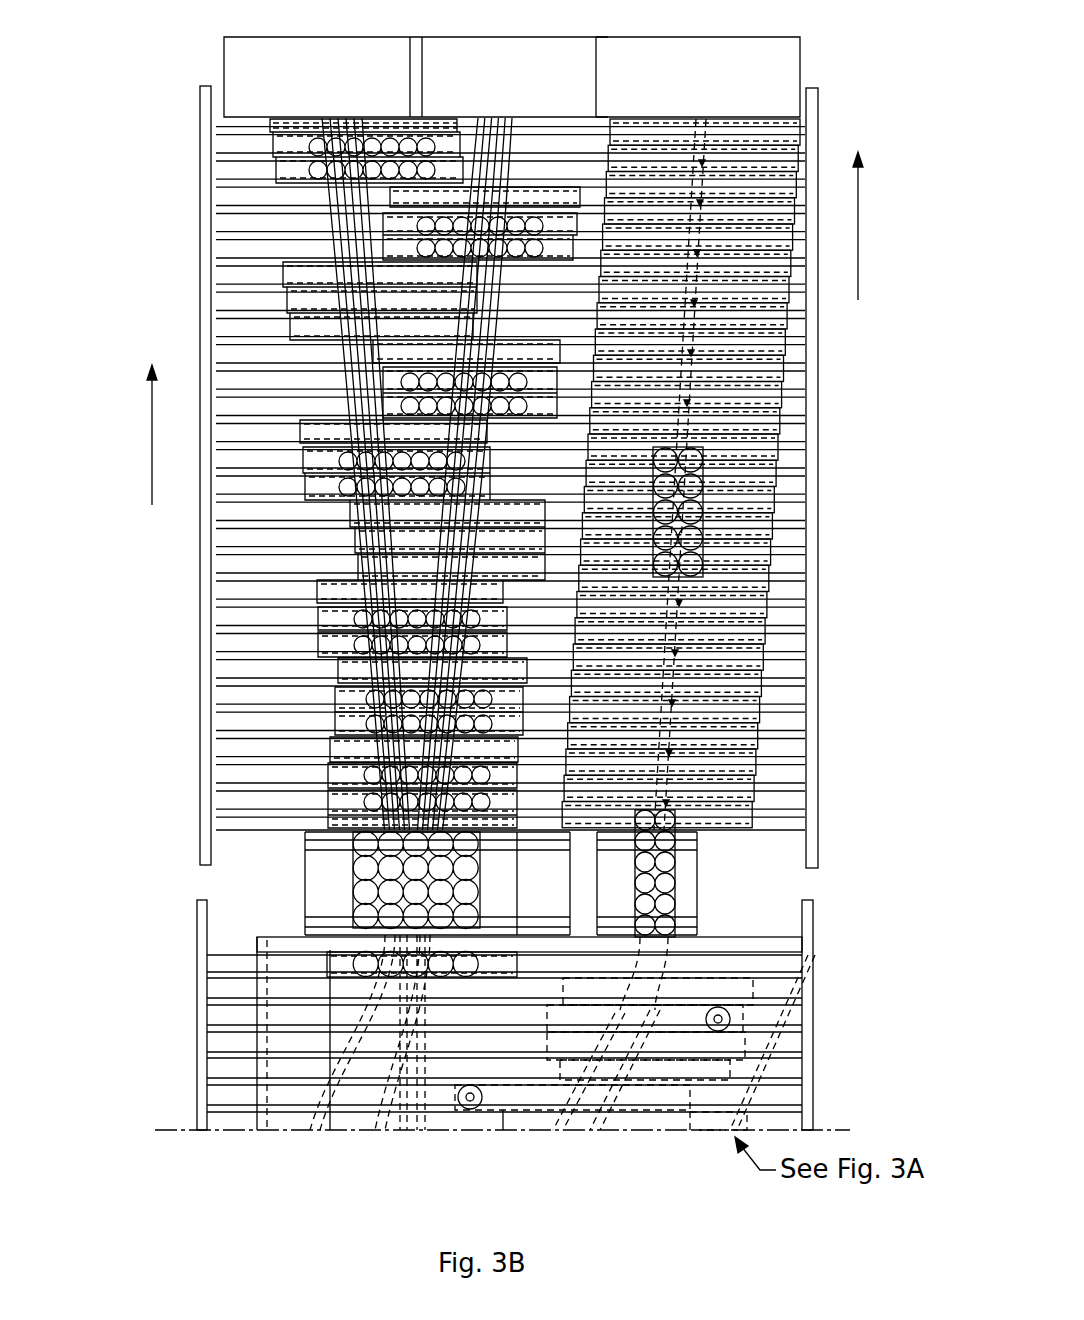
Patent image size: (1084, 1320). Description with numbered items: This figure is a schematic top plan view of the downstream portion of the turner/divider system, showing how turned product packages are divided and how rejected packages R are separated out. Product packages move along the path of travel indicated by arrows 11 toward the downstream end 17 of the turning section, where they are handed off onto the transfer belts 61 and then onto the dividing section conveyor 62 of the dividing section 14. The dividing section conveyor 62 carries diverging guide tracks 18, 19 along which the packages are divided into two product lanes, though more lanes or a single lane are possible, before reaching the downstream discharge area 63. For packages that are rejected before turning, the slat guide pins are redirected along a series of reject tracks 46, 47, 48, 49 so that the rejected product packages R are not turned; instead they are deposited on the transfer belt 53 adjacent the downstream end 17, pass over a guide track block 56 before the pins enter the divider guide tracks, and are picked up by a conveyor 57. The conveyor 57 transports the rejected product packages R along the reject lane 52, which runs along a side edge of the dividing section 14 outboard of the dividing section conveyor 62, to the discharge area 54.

The path of travel 11 is at (152, 452).
The dividing section 14 is at (175, 558).
The downstream end 17 is at (285, 910).
The guide track 18 is at (350, 213).
The guide track 19 is at (500, 118).
The reject track 46 is at (585, 967).
The reject track 47 is at (640, 1005).
The reject track 48 is at (690, 1075).
The reject track 49 is at (670, 1023).
The reject lane 52 is at (826, 402).
The transfer belt 53 is at (690, 835).
The discharge area 54 is at (750, 67).
The guide track block 56 is at (685, 870).
The conveyor 57 is at (788, 538).
The transfer belt 61 is at (325, 878).
The dividing section conveyor 62 is at (240, 642).
The downstream discharge area 63 is at (465, 59).
The rejected product package R is at (710, 488).